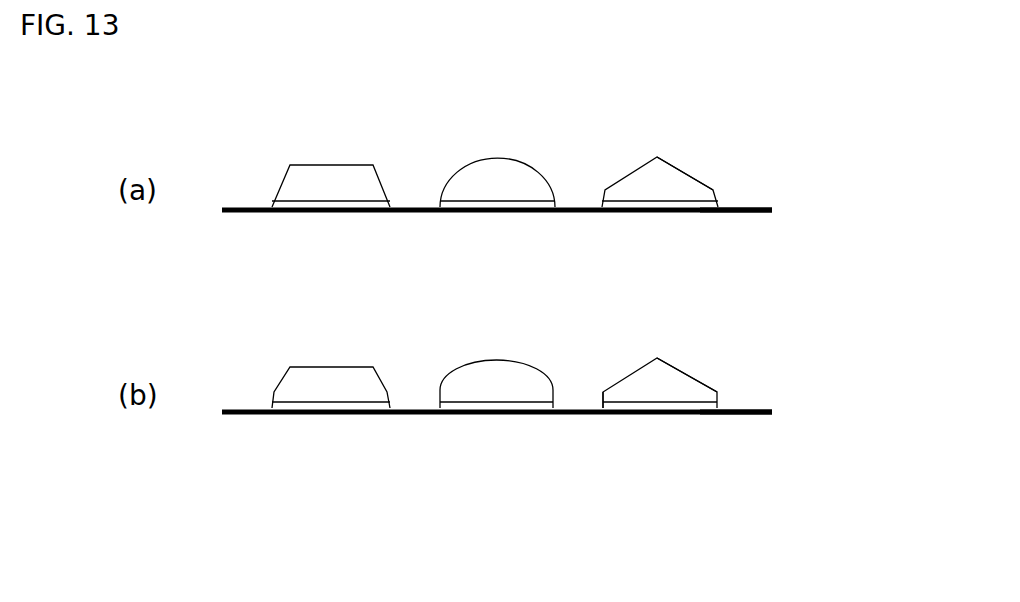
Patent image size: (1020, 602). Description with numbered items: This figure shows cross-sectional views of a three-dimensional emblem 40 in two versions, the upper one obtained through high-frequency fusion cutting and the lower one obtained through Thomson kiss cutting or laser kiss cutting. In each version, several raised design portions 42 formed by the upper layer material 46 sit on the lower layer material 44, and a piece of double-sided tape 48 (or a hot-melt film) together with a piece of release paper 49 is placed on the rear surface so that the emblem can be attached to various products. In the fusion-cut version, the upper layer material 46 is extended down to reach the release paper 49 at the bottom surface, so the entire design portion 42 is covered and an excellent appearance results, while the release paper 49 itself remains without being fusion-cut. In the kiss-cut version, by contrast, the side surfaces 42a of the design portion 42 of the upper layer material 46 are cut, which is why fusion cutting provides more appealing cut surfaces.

The three-dimensional emblem 40 is at (748, 176).
The design portion 42 is at (610, 172).
The side surfaces of the design portion 42a is at (603, 393).
The lower layer material 44 is at (658, 185).
The upper layer material 46 is at (683, 168).
The double-sided tape 48 is at (627, 213).
The release paper 49 is at (758, 213).